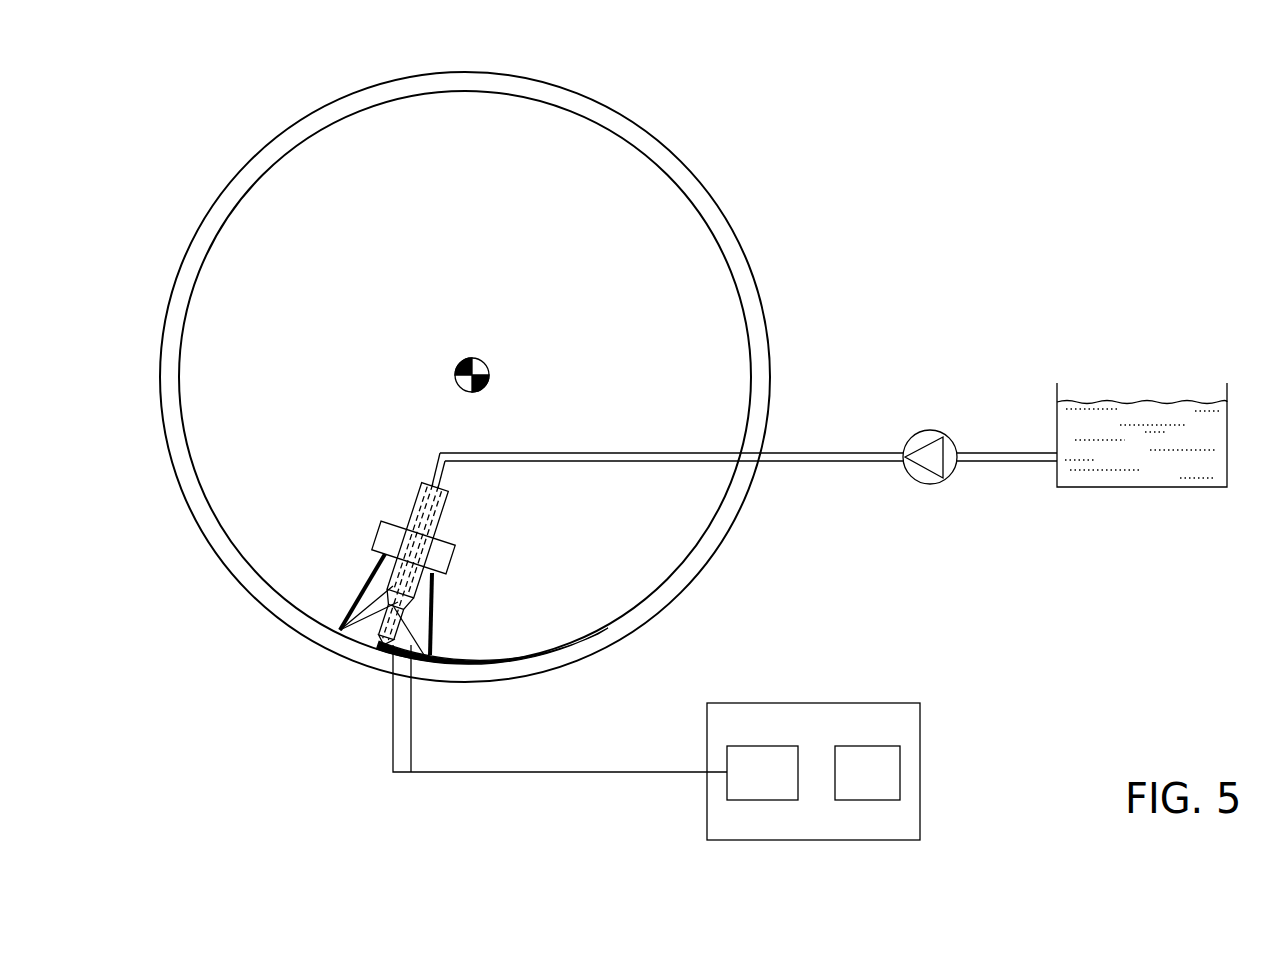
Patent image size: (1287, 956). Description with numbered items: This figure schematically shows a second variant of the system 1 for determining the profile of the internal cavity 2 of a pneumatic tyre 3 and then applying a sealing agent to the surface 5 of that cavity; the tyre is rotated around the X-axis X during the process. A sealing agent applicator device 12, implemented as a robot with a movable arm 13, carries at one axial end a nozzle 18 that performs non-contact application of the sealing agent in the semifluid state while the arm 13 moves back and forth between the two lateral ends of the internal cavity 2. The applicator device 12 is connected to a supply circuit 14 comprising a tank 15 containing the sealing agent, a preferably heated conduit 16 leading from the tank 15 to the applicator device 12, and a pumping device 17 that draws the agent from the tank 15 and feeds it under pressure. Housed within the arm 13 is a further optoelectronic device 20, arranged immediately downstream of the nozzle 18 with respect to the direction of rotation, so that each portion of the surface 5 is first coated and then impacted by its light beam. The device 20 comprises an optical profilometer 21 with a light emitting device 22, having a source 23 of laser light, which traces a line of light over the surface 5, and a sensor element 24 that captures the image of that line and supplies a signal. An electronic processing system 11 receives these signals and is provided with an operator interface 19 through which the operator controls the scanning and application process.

The system 1 is at (495, 353).
The internal cavity 2 is at (495, 353).
The pneumatic tyre 3 is at (712, 207).
The surface 5 is at (711, 254).
The X-axis X is at (457, 362).
The sealing agent applicator device 12 is at (667, 450).
The conduit 16 is at (820, 463).
The pumping device 17 is at (912, 480).
The tank 15 is at (1090, 488).
The circuit 14 is at (1059, 428).
The electronic processing system 11 is at (708, 742).
The operator interface 19 is at (867, 773).
The sensor element 24 is at (448, 551).
The arm 13 is at (449, 493).
The nozzle 18 is at (377, 622).
The light emitting device 22 is at (483, 563).
The source of laser light 23 is at (483, 563).
The optical profilometer 21 is at (476, 557).
The further optoelectronic device 20 is at (475, 572).